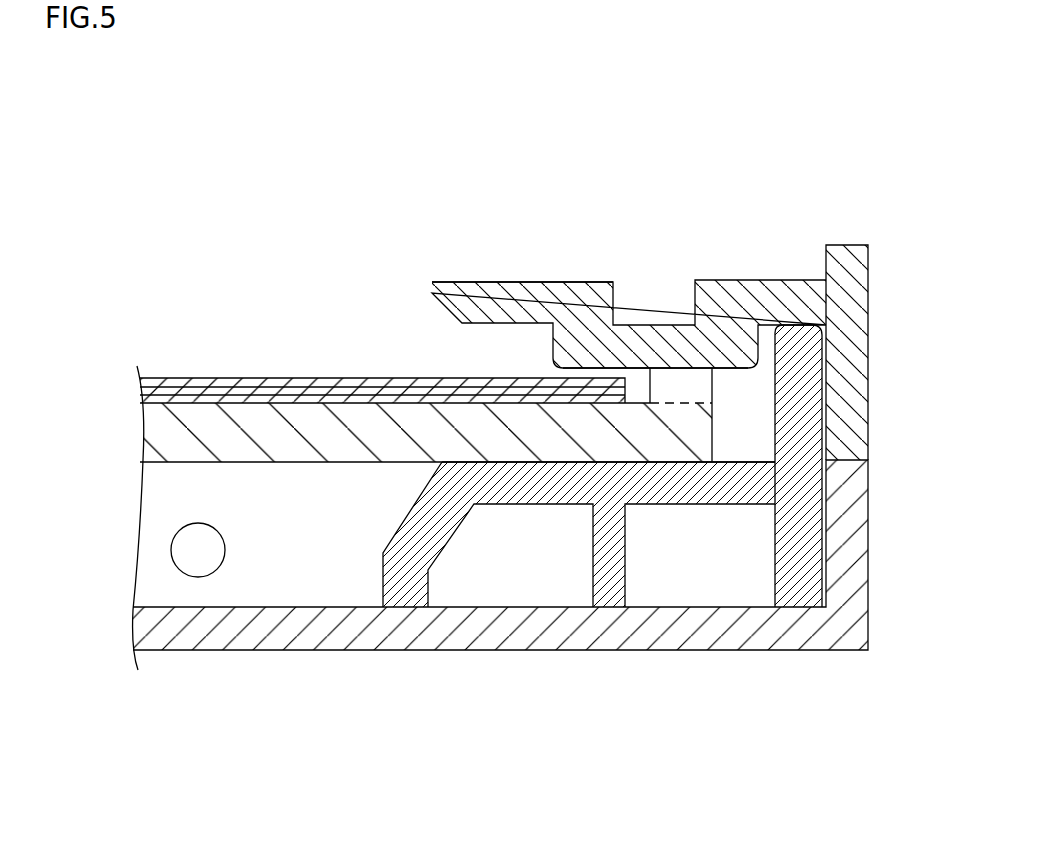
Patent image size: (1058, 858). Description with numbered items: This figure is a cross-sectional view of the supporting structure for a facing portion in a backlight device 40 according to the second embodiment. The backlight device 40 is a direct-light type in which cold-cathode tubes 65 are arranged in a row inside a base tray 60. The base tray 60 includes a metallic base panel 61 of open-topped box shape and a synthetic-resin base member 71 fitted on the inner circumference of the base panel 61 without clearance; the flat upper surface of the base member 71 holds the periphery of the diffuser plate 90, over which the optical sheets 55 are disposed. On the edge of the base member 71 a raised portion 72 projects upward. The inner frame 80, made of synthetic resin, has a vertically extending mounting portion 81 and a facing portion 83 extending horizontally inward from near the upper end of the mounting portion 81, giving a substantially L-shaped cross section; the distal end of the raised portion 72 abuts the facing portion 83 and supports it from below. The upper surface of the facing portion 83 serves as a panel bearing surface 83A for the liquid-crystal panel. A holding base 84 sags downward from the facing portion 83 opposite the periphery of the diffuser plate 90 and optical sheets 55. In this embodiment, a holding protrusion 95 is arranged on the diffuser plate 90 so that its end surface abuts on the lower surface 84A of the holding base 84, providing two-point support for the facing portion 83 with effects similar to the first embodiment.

The backlight device 40 is at (267, 195).
The optical sheets 55 is at (188, 353).
The diffuser plate 90 is at (312, 432).
The holding protrusion 95 is at (688, 383).
The base tray 60 is at (528, 740).
The base panel 61 is at (340, 633).
The cold-cathode tubes 65 is at (194, 566).
The base member 71 is at (540, 477).
The raised portion 72 is at (797, 395).
The inner frame 80 is at (903, 112).
The mounting portion 81 is at (858, 362).
The facing portion 83 is at (583, 293).
The holding base 84 is at (647, 343).
The panel bearing surface 83A is at (477, 288).
The lower surface 84A is at (547, 415).